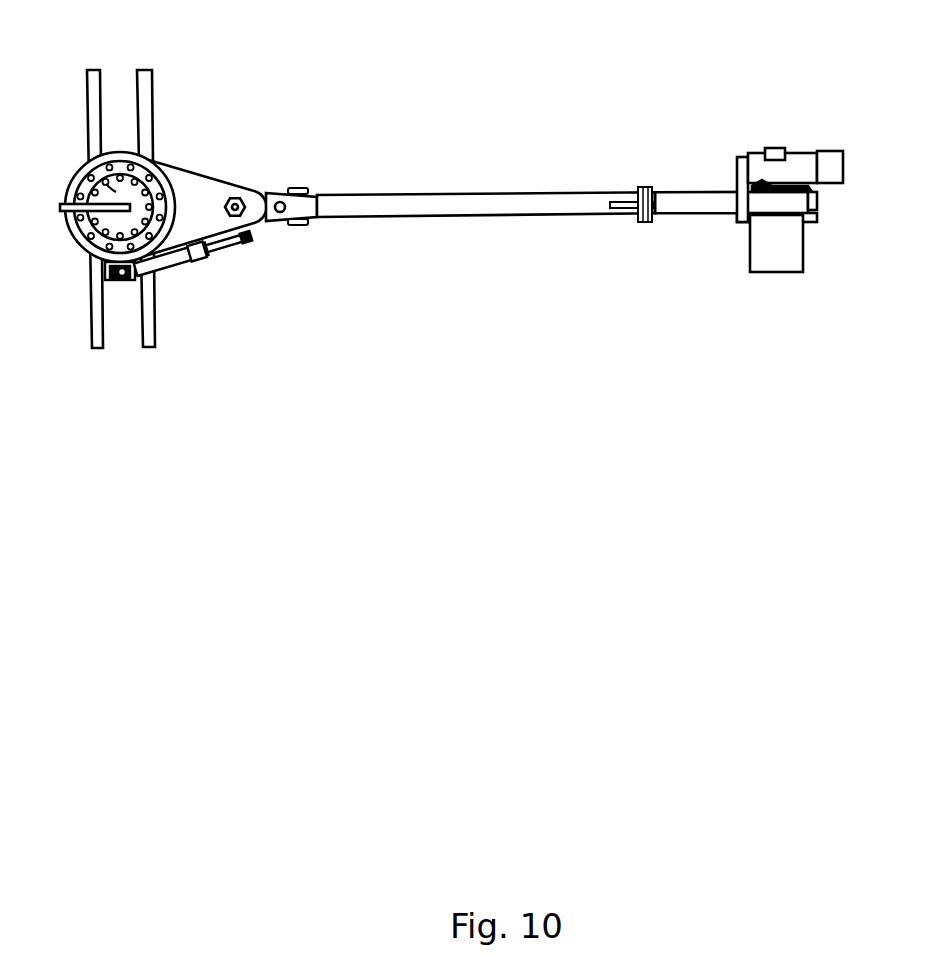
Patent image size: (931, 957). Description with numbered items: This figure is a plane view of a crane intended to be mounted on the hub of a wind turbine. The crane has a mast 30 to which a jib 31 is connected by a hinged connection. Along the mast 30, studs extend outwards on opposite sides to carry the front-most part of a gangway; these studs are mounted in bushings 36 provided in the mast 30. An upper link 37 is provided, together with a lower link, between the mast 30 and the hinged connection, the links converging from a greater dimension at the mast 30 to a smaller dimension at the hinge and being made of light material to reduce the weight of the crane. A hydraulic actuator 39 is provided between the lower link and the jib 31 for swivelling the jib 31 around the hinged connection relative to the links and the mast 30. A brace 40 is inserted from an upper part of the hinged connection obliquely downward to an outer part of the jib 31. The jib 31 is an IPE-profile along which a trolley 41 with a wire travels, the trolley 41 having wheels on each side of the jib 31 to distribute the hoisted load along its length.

The mast 30 is at (87, 163).
The jib 31 is at (717, 198).
The bushings 36 is at (92, 102).
The upper link 37 is at (197, 197).
The hydraulic actuator 39 is at (178, 262).
The brace 40 is at (432, 203).
The trolley 41 is at (748, 134).